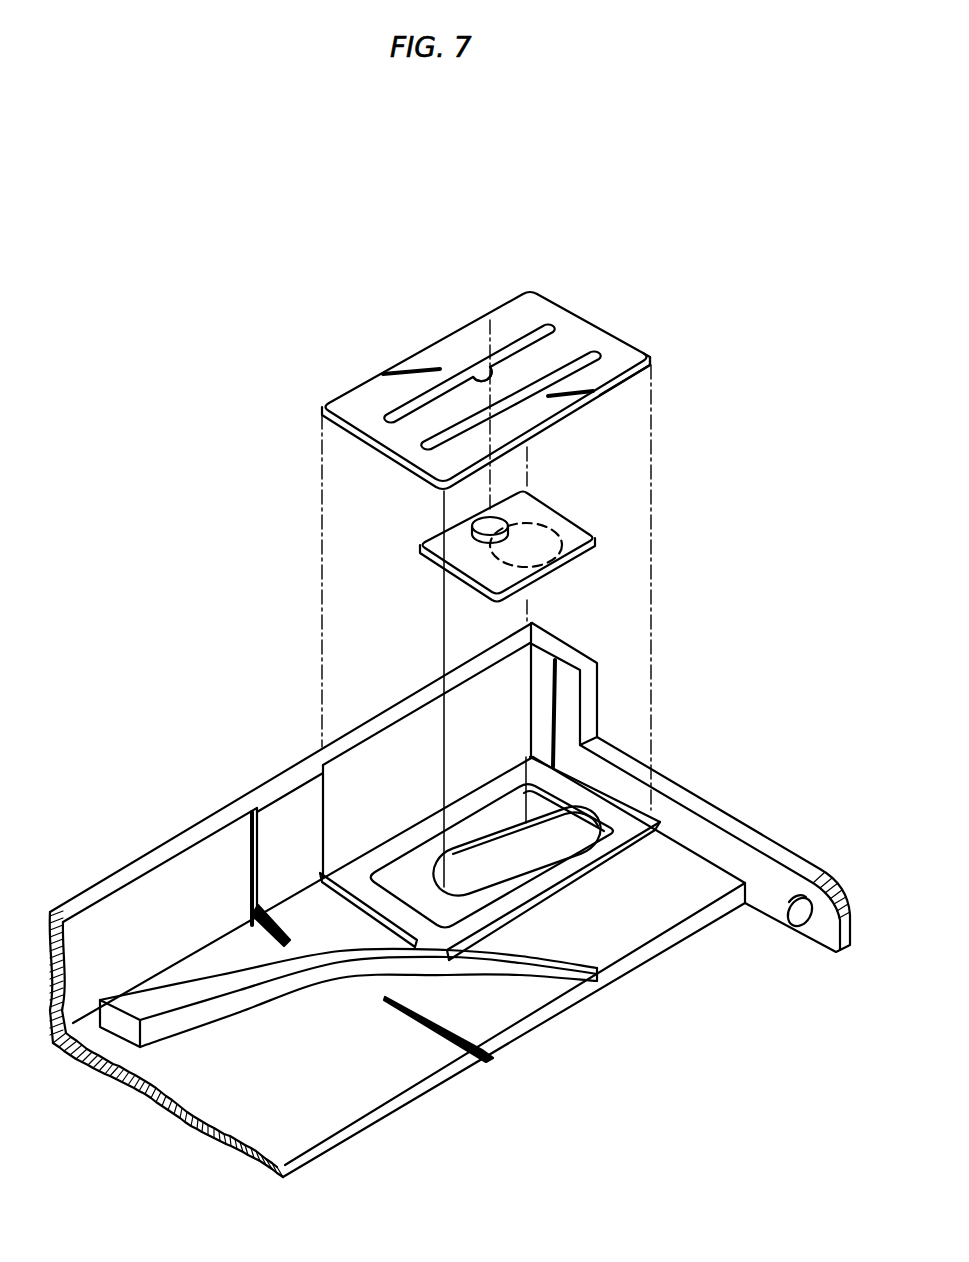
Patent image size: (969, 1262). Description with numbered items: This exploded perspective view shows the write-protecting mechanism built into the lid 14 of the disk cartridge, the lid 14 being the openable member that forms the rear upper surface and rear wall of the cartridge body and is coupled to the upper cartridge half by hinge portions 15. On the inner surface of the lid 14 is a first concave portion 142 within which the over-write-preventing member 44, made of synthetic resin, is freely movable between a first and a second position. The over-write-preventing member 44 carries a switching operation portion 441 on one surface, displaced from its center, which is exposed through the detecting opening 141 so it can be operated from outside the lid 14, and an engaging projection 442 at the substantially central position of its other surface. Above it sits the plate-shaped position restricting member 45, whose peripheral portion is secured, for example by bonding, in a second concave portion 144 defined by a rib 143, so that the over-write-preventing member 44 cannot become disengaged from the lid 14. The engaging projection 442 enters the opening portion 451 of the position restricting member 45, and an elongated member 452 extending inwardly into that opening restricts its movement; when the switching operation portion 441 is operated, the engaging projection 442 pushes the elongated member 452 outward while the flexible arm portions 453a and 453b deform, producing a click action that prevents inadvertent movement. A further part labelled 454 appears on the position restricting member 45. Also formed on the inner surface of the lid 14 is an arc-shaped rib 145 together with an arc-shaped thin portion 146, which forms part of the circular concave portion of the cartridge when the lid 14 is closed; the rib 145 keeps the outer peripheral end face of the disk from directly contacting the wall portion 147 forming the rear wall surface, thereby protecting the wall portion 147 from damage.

The lid 14 is at (450, 900).
The hinge portion 15 is at (790, 922).
The over-write-preventing member 44 is at (491, 547).
The position restricting member 45 is at (534, 375).
The detecting opening 141 is at (518, 860).
The first concave portion 142 is at (460, 903).
The rib 143 is at (648, 842).
The second concave portion 144 is at (600, 843).
The rib 145 is at (323, 973).
The arc-shaped thin portion 146 is at (480, 1038).
The wall portion 147 is at (192, 870).
The switching operation portion 441 is at (560, 536).
The engaging projection 442 is at (500, 514).
The opening portion 451 is at (460, 373).
The elongated member 452 is at (457, 393).
The arm portion 453a is at (537, 363).
The arm portion 453b is at (433, 420).
The plate edge 454 is at (617, 340).